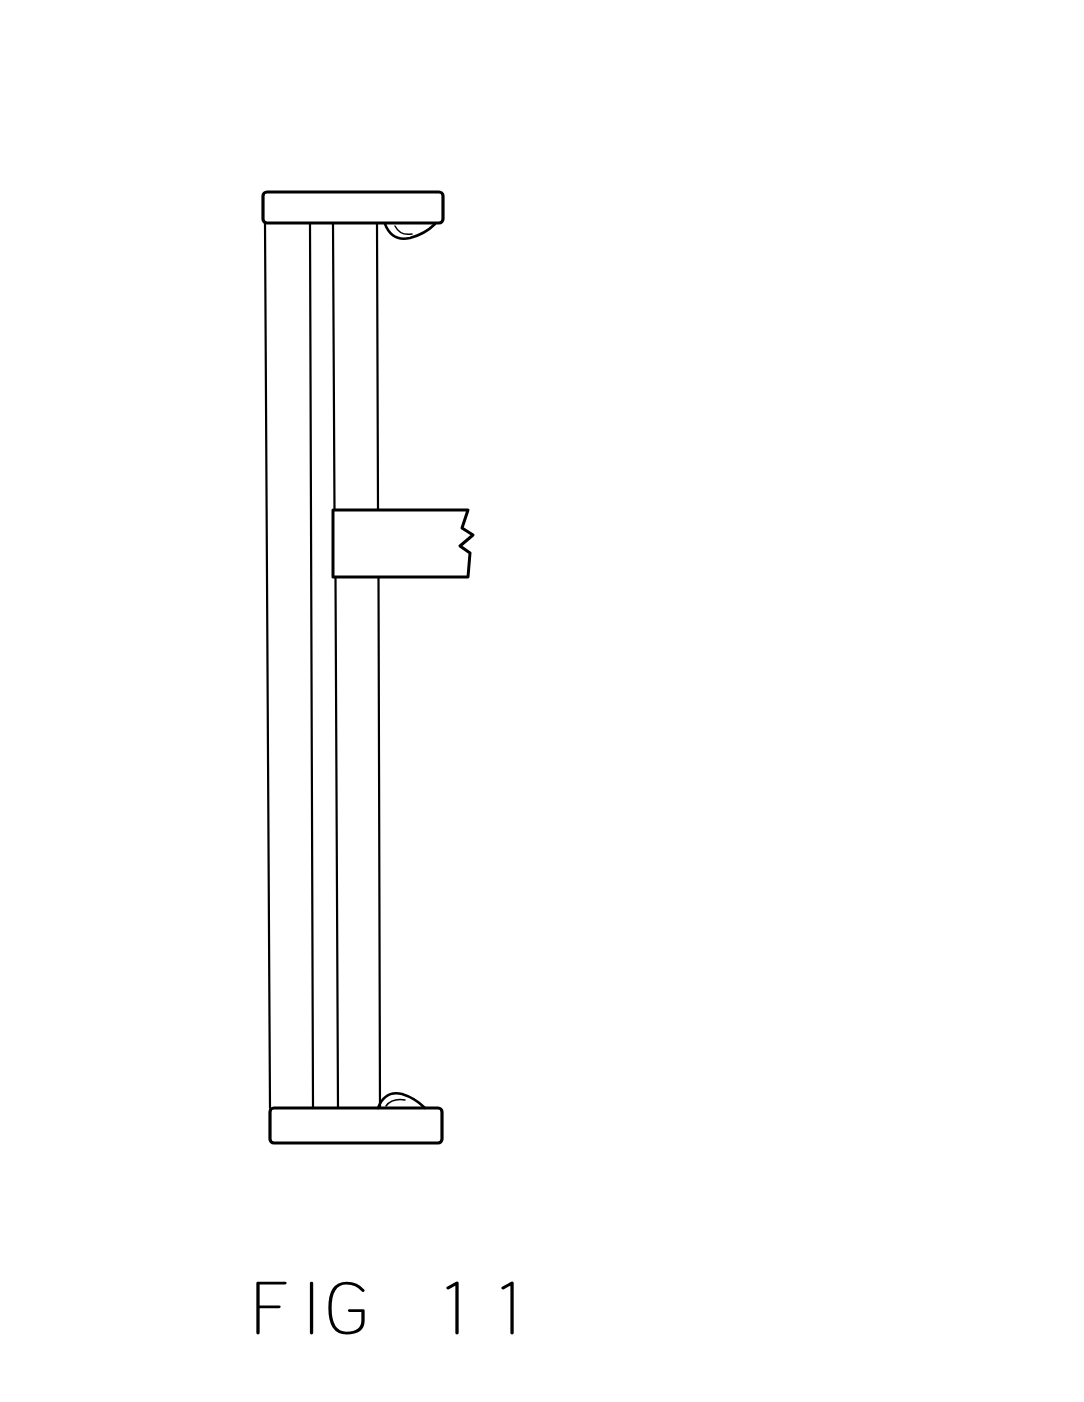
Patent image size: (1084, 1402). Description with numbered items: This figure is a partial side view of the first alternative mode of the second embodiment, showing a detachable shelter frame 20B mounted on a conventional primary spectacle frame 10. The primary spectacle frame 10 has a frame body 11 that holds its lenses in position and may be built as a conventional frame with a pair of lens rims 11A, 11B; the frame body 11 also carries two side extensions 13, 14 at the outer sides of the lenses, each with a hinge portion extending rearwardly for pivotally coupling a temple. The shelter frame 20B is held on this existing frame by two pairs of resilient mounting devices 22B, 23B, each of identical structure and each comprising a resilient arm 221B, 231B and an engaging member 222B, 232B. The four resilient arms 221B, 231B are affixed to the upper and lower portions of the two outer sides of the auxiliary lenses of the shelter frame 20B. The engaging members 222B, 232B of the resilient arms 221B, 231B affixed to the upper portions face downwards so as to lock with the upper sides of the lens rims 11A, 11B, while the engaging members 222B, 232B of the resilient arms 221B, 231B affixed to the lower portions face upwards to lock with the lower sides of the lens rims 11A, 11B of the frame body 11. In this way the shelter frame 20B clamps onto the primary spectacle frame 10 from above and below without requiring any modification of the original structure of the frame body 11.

The primary spectacle frame 10 is at (493, 665).
The frame body 11 is at (493, 665).
The lens rim 11A is at (608, 464).
The lens rim 11B is at (493, 665).
The side extension 13 is at (440, 589).
The side extension 14 is at (402, 572).
The detachable shelter frame 20B is at (454, 617).
The resilient mounting device 22B is at (539, 152).
The resilient mounting device 23B is at (539, 152).
The resilient arm 221B is at (423, 149).
The resilient arm 231B is at (375, 182).
The engaging member 222B is at (521, 257).
The engaging member 232B is at (521, 257).